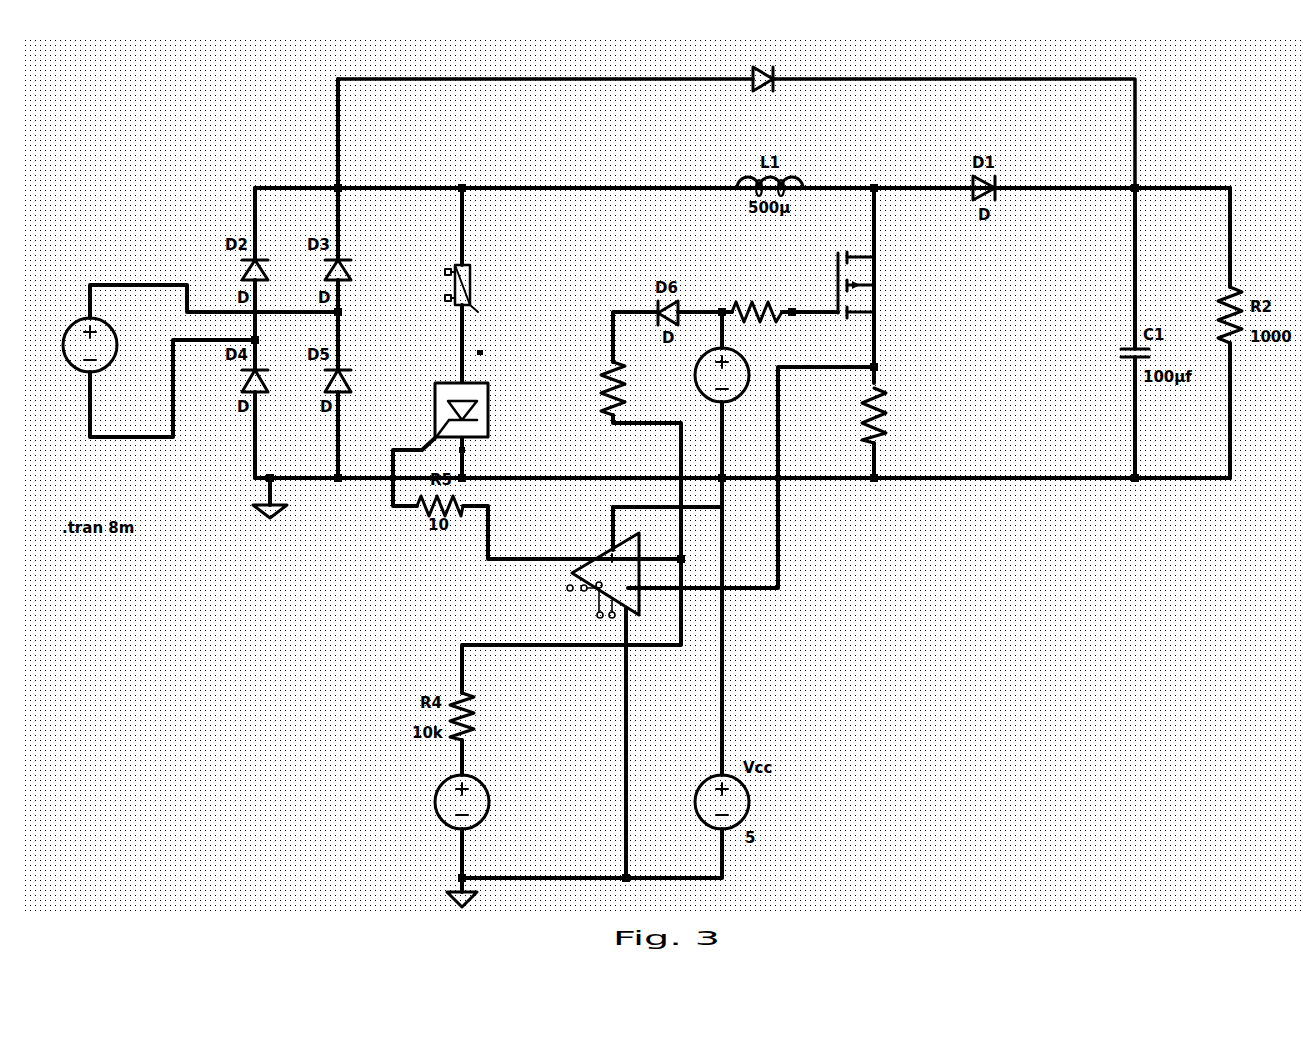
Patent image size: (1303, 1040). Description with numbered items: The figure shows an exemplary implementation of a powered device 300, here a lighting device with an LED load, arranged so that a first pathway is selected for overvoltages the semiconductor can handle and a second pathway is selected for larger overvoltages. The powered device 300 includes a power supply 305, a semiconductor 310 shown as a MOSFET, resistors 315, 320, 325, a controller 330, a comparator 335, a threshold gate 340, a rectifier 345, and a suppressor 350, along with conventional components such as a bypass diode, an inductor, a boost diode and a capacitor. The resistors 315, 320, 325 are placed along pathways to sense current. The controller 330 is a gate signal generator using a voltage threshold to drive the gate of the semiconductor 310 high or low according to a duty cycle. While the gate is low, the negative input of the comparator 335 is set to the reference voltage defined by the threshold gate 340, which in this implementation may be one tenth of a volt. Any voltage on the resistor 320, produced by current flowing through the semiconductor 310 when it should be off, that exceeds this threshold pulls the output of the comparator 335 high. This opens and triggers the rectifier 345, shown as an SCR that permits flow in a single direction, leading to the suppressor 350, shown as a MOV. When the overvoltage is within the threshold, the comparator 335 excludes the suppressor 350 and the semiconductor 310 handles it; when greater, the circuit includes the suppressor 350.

The powered device 300 is at (1298, 69).
The power supply 305 is at (131, 285).
The semiconductor 310 is at (917, 278).
The resistor 315 is at (745, 297).
The resistor 320 is at (917, 402).
The resistor 325 is at (577, 358).
The controller 330 is at (735, 407).
The comparator 335 is at (625, 608).
The threshold gate 340 is at (435, 805).
The rectifier 345 is at (430, 403).
The suppressor 350 is at (492, 248).